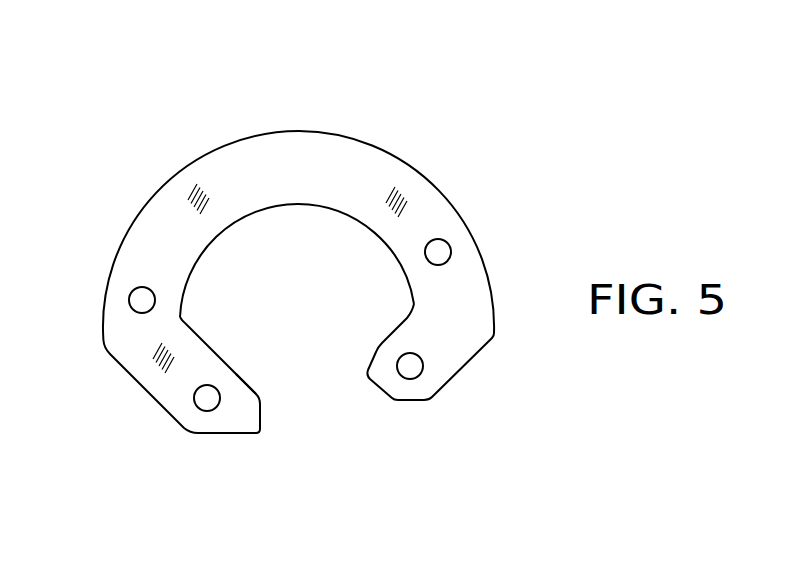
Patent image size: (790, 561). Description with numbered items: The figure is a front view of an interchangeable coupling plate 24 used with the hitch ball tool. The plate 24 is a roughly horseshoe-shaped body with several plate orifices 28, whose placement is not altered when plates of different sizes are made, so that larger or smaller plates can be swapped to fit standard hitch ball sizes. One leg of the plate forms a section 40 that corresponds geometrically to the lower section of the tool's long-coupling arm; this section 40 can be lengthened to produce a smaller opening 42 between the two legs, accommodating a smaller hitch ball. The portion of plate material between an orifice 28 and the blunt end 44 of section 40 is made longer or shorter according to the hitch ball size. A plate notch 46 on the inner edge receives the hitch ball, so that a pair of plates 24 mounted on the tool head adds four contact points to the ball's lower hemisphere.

The coupling plate 24 is at (453, 113).
The plate orifice 28 is at (140, 300).
The section 40 is at (247, 450).
The opening 42 is at (378, 393).
The blunt end 44 is at (263, 420).
The plate notch 46 is at (232, 360).